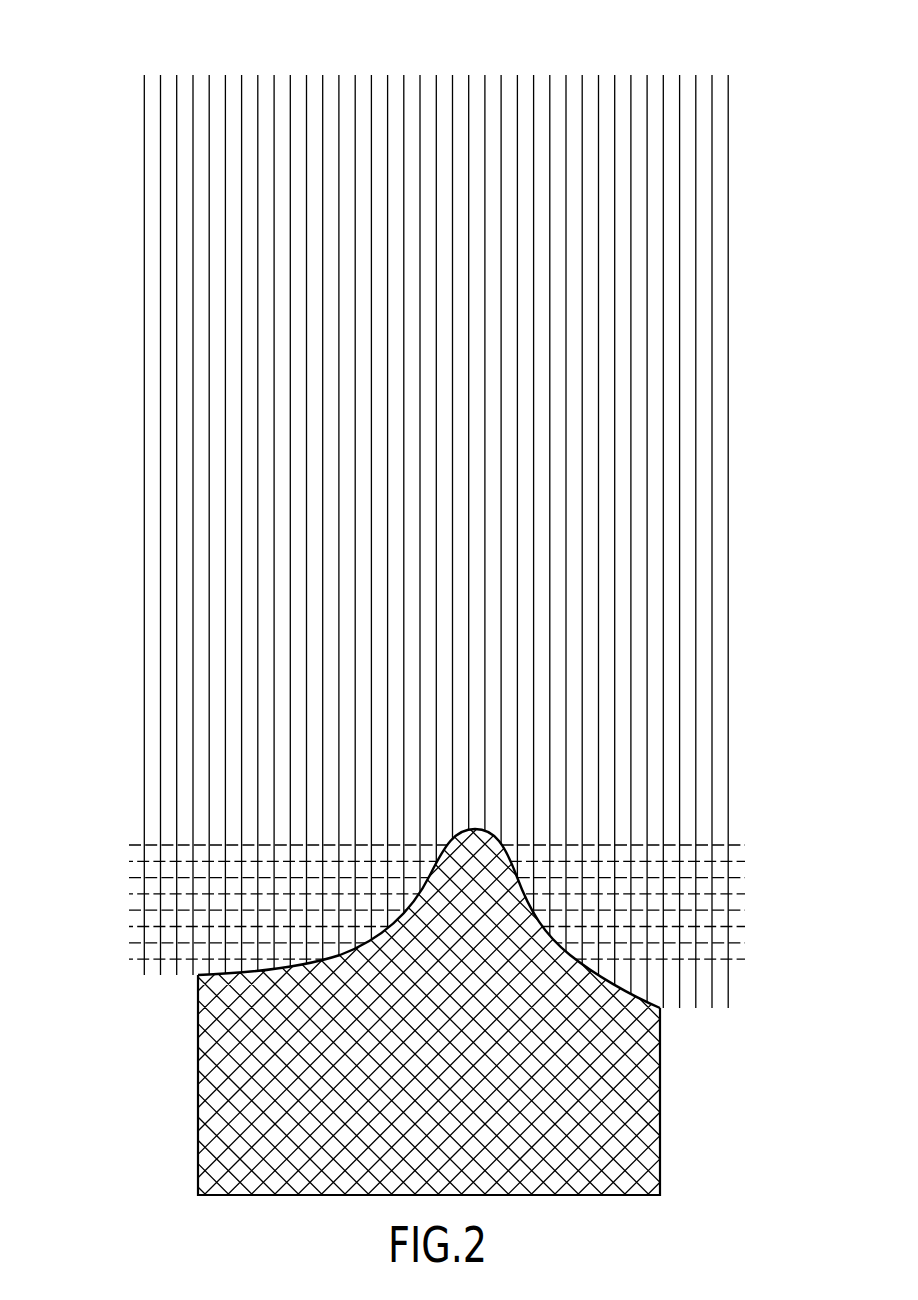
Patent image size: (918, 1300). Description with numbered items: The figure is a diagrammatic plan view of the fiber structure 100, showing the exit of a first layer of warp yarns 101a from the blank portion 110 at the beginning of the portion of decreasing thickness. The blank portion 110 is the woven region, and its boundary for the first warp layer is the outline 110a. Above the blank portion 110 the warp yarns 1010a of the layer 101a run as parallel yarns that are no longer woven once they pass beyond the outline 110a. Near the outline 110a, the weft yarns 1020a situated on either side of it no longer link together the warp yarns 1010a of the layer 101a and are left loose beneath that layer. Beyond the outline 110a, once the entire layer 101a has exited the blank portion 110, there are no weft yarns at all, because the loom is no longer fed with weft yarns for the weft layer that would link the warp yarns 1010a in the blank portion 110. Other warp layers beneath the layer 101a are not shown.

The fiber structure 100 is at (426, 601).
The first layer of warp yarns 101a is at (728, 68).
The warp yarns 1010a is at (697, 187).
The weft yarns 1020a is at (130, 862).
The blank portion 110 is at (606, 1100).
The outline 110a is at (527, 893).